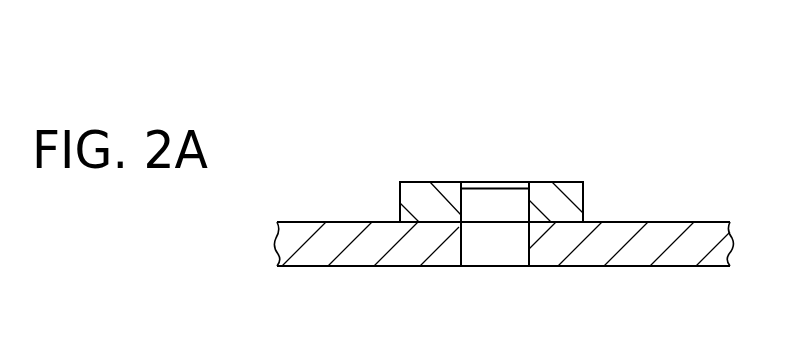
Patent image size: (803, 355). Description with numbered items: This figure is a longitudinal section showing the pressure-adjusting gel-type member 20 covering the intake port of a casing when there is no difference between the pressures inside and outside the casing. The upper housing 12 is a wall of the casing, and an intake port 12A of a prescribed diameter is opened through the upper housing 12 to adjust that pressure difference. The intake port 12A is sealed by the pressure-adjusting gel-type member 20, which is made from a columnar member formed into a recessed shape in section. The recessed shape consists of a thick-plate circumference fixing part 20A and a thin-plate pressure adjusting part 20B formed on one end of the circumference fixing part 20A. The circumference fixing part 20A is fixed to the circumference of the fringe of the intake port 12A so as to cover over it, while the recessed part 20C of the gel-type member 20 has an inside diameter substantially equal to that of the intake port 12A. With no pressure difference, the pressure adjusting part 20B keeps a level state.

The upper housing 12 is at (688, 253).
The intake port 12A is at (463, 247).
The pressure-adjusting gel-type member 20 is at (510, 58).
The circumference fixing part 20A is at (440, 203).
The pressure adjusting part 20B is at (518, 211).
The recessed part 20C is at (513, 188).